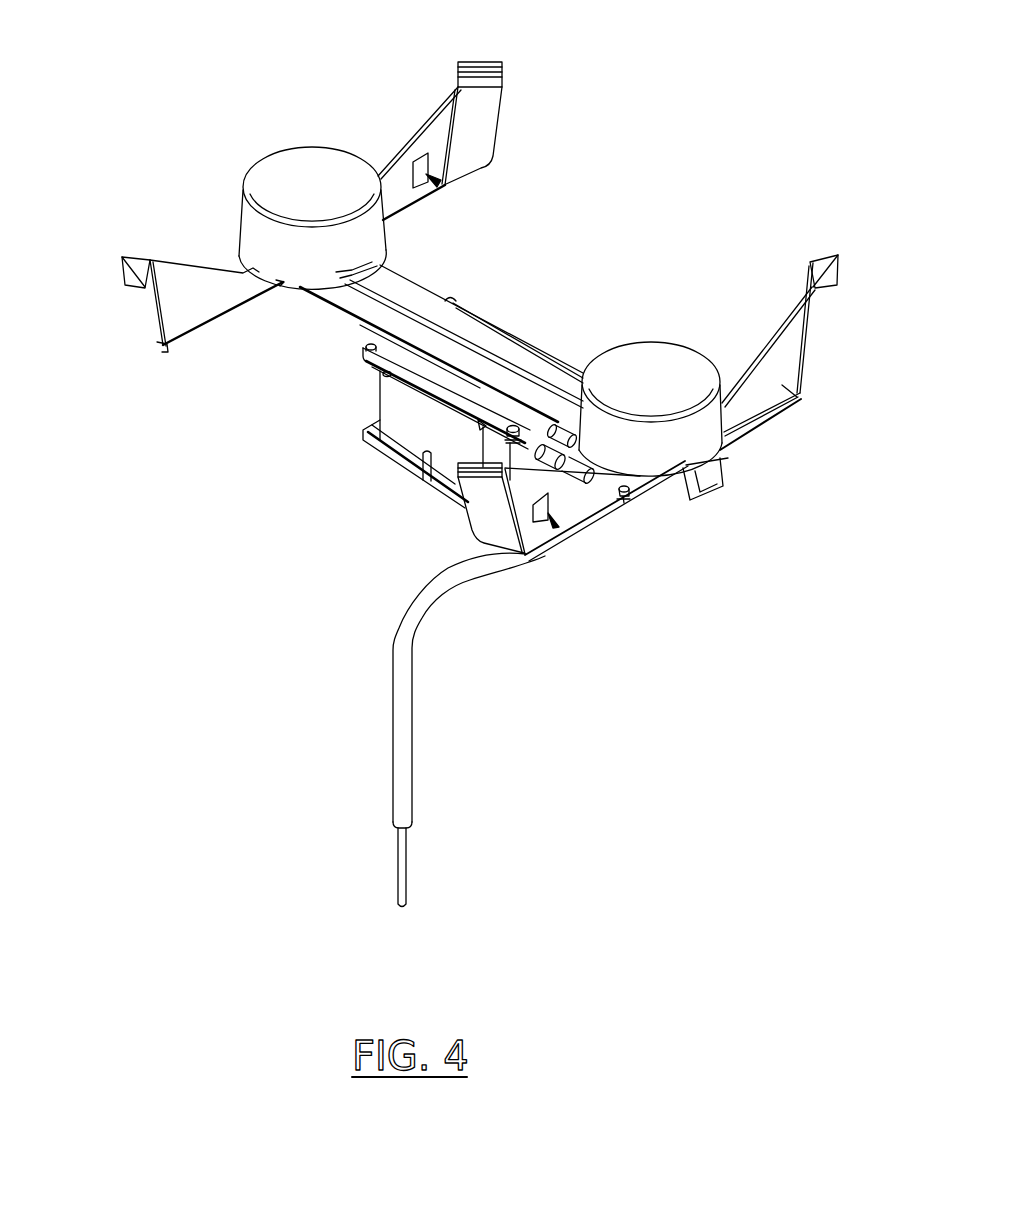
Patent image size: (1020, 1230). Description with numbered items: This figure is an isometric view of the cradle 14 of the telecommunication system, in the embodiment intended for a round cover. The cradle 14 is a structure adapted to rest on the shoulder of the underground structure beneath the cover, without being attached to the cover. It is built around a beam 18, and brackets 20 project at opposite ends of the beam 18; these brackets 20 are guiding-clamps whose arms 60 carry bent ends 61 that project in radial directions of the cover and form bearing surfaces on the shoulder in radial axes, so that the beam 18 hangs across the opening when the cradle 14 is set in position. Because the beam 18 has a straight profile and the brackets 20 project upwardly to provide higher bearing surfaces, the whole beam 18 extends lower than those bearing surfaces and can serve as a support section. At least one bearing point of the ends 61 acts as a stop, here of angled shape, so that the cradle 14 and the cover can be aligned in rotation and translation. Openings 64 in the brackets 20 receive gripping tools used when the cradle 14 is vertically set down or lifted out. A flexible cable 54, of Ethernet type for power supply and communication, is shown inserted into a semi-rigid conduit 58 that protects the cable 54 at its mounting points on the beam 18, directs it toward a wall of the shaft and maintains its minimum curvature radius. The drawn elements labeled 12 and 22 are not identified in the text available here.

The housing 12 is at (362, 467).
The cradle 14 is at (472, 313).
The beam 18 is at (347, 312).
The brackets 20 is at (472, 313).
The drum 22 is at (269, 149).
The cable 54 is at (408, 850).
The semi-rigid conduit 58 is at (413, 631).
The arms 60 is at (188, 322).
The bent ends 61 is at (122, 257).
The openings 64 is at (440, 184).